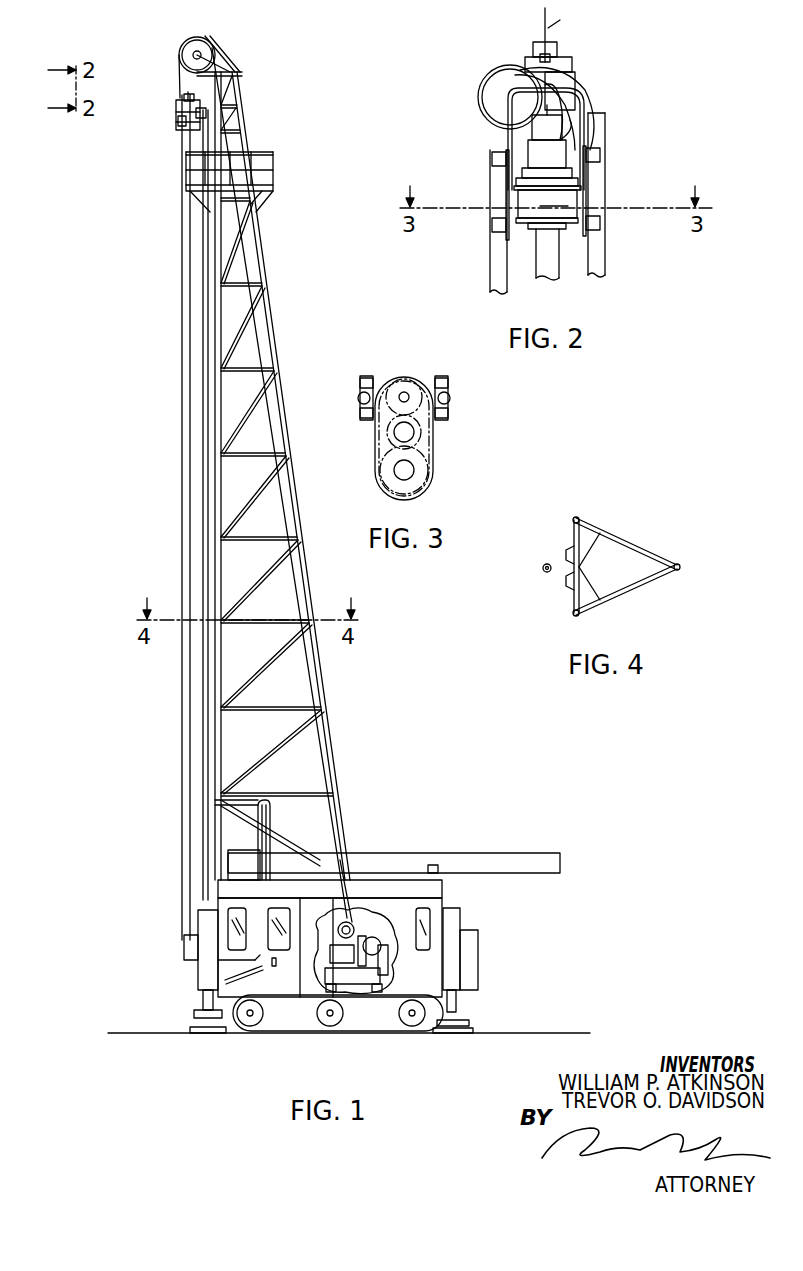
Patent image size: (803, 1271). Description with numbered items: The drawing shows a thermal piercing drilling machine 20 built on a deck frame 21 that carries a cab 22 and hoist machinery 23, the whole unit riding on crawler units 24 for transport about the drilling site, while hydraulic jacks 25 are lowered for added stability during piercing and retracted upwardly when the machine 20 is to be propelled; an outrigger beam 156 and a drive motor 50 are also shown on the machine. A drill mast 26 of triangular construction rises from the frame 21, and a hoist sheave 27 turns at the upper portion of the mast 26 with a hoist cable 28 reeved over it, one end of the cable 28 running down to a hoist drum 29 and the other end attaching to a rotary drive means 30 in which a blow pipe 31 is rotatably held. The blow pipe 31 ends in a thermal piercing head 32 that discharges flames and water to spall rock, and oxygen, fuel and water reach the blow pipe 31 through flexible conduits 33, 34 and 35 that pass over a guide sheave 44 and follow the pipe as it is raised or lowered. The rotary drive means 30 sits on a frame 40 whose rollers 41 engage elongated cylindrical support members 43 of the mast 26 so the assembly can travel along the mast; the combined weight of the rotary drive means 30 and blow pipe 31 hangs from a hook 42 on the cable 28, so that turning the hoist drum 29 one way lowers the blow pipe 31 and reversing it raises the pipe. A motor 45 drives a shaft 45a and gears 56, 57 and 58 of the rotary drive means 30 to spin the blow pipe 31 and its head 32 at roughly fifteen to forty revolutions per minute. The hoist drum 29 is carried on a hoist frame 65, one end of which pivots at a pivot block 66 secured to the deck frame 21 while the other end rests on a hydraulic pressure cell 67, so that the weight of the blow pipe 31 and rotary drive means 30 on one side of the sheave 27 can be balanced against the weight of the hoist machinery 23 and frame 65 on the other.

In FIG. 1, the thermal piercing drilling machine 20 is at (385, 832).
In FIG. 1, the deck frame 21 is at (360, 990).
In FIG. 1, the cab 22 is at (445, 900).
In FIG. 1, the hoist machinery 23 is at (356, 924).
In FIG. 1, the crawler units 24 is at (250, 1030).
In FIG. 1, the hydraulic jacks 25 is at (195, 1015).
In FIG. 1, the drill mast 26 is at (336, 758).
In FIG. 4, the drill mast 26 is at (650, 584).
In FIG. 1, the hoist sheave 27 is at (180, 48).
In FIG. 1, the hoist cable 28 is at (180, 97).
In FIG. 2, the hoist cable 28 is at (540, 30).
In FIG. 1, the hoist drum 29 is at (340, 926).
In FIG. 1, the rotary drive means 30 is at (178, 128).
In FIG. 2, the rotary drive means 30 is at (563, 206).
In FIG. 3, the rotary drive means 30 is at (436, 446).
In FIG. 1, the blow pipe 31 is at (182, 340).
In FIG. 2, the blow pipe 31 is at (560, 280).
In FIG. 3, the blow pipe 31 is at (416, 472).
In FIG. 4, the blow pipe 31 is at (543, 566).
In FIG. 1, the thermal piercing head 32 is at (184, 960).
In FIG. 1, the conduit 33 is at (258, 830).
In FIG. 2, the conduit 33 is at (548, 108).
In FIG. 1, the conduit 34 is at (268, 806).
In FIG. 2, the conduit 34 is at (565, 125).
In FIG. 1, the conduit 35 is at (275, 832).
In FIG. 2, the conduit 35 is at (578, 180).
In FIG. 2, the frame 40 is at (572, 208).
In FIG. 2, the rollers 41 is at (600, 150).
In FIG. 3, the rollers 41 is at (360, 384).
In FIG. 1, the hook 42 is at (178, 110).
In FIG. 2, the hook 42 is at (552, 58).
In FIG. 1, the elongated cylindrical support members 43 is at (203, 434).
In FIG. 2, the elongated cylindrical support members 43 is at (490, 286).
In FIG. 3, the elongated cylindrical support members 43 is at (358, 398).
In FIG. 4, the elongated cylindrical support members 43 is at (565, 552).
In FIG. 2, the guide sheave 44 is at (490, 75).
In FIG. 1, the motor 45 is at (186, 95).
In FIG. 2, the motor 45 is at (566, 15).
In FIG. 3, the shaft 45a is at (406, 392).
In FIG. 1, the drive motor 50 is at (178, 120).
In FIG. 2, the drive motor 50 is at (545, 148).
In FIG. 3, the gear 56 is at (396, 382).
In FIG. 3, the gear 57 is at (395, 438).
In FIG. 3, the gear 58 is at (382, 480).
In FIG. 1, the hoist frame 65 is at (388, 970).
In FIG. 1, the pivot block 66 is at (328, 990).
In FIG. 1, the hydraulic pressure cell 67 is at (380, 992).
In FIG. 1, the outrigger beam 156 is at (540, 855).